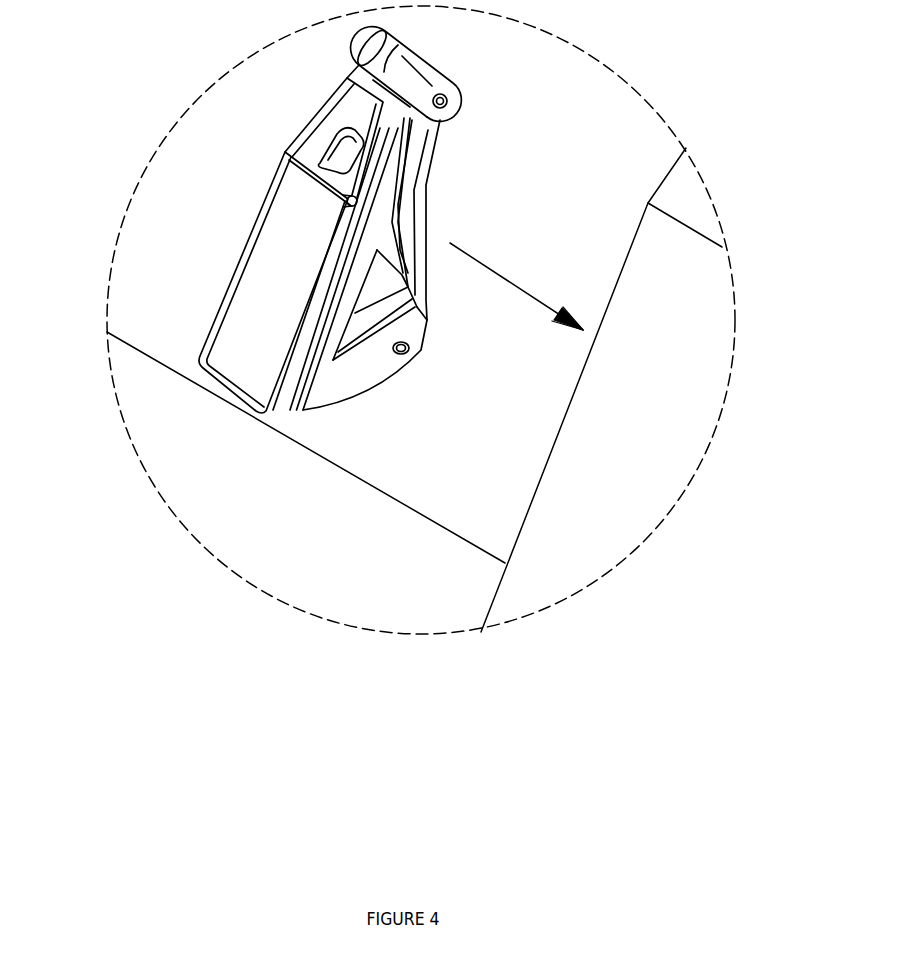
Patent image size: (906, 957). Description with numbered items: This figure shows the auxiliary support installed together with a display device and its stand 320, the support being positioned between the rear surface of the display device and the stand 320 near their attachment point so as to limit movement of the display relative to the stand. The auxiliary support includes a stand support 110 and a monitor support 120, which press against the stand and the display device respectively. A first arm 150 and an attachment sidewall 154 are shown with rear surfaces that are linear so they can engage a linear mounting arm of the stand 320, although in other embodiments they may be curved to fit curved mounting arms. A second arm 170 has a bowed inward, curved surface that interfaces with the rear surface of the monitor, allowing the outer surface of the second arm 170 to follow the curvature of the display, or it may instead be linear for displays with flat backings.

The stand support 110 is at (262, 273).
The monitor support 120 is at (423, 205).
The first arm 150 is at (360, 168).
The attachment sidewall 154 is at (345, 198).
The second arm 170 is at (423, 243).
The stand 320 is at (648, 458).